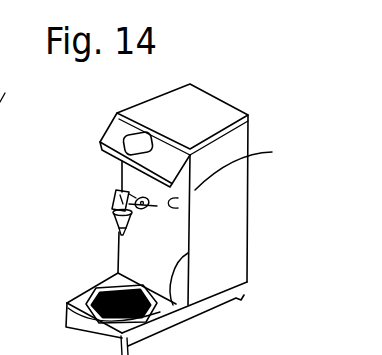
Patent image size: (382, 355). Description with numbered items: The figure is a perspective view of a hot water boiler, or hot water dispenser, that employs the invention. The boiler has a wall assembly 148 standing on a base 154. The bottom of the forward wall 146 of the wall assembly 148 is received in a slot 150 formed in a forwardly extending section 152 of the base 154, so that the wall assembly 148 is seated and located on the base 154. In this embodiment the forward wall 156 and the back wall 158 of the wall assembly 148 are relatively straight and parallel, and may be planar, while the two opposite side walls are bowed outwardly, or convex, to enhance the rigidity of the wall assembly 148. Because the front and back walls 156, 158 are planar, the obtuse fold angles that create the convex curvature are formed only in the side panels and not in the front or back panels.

The forward wall 146 is at (135, 245).
The wall assembly 148 is at (227, 212).
The slot 150 is at (188, 253).
The forwardly extending section 152 is at (115, 280).
The base 154 is at (244, 297).
The forward wall 156 is at (253, 162).
The back wall 158 is at (247, 235).